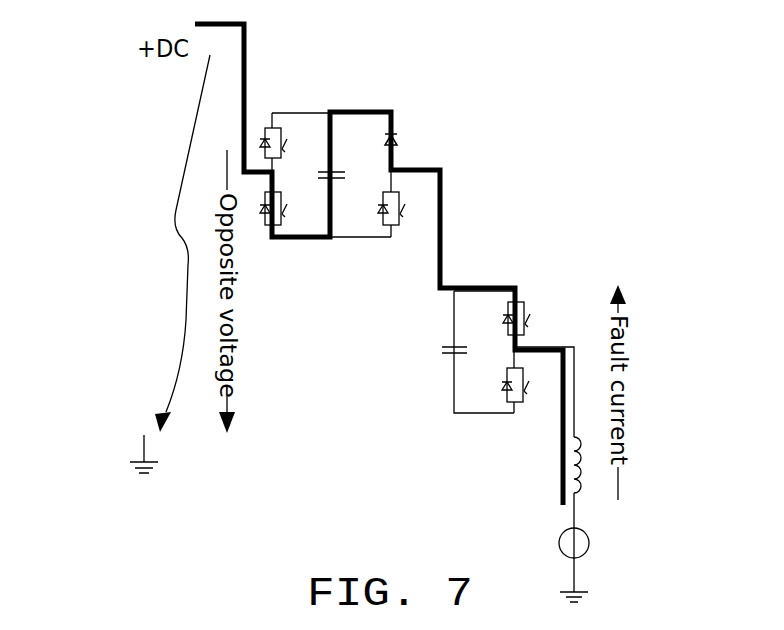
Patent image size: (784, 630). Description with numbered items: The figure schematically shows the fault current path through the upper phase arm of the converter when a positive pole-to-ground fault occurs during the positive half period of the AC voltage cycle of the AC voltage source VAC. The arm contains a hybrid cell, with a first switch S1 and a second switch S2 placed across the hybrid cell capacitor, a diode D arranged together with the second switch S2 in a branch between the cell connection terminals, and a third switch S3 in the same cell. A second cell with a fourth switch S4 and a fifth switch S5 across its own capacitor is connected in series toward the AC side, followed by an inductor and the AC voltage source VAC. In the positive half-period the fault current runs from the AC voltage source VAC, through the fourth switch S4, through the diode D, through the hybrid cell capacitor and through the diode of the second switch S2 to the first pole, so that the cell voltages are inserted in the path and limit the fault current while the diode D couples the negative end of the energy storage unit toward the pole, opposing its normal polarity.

The first switch S1 is at (287, 143).
The second switch S2 is at (287, 208).
The third switch S3 is at (405, 208).
The fourth switch S4 is at (531, 318).
The fifth switch S5 is at (530, 385).
The diode D is at (404, 139).
The AC voltage source VAC is at (604, 543).